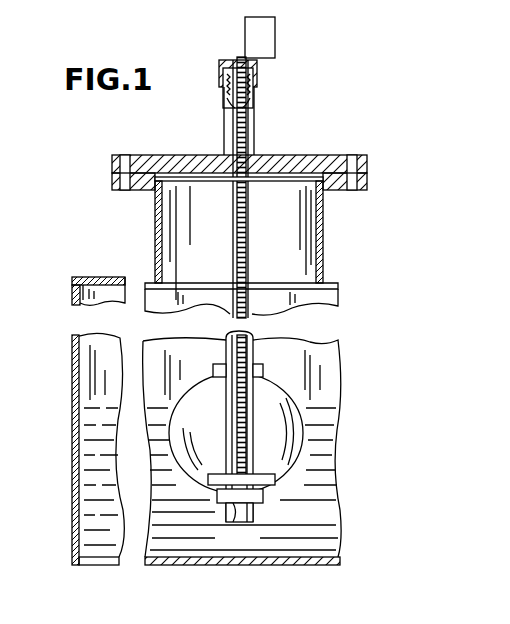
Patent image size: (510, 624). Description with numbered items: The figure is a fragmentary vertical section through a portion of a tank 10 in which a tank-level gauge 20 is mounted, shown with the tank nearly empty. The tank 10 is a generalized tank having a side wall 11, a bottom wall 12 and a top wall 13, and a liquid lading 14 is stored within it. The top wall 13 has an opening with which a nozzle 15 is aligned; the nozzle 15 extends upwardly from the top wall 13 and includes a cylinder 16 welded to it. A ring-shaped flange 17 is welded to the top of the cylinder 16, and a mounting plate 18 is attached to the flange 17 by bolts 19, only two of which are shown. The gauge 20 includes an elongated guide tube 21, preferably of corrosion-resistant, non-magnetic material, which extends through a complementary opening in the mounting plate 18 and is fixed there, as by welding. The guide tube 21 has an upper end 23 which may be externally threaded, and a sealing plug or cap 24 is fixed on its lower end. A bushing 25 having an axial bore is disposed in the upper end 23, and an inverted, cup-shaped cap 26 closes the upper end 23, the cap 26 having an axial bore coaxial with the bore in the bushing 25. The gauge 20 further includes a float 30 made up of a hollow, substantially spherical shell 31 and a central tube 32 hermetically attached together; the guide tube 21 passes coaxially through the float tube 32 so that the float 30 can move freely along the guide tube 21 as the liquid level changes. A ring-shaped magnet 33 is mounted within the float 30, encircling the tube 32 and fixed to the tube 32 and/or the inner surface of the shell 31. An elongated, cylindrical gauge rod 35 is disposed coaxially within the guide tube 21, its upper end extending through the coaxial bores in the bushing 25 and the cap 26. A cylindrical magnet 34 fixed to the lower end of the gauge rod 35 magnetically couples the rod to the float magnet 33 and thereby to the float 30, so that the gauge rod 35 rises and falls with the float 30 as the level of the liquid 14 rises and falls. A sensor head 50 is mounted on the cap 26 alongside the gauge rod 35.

The tank 10 is at (63, 222).
The side wall 11 is at (72, 534).
The bottom wall 12 is at (158, 567).
The top wall 13 is at (112, 276).
The liquid lading 14 is at (333, 453).
The nozzle 15 is at (284, 238).
The cylinder 16 is at (253, 276).
The ring-shaped flange 17 is at (279, 241).
The mounting plate 18 is at (298, 159).
The bolts 19 is at (126, 148).
The gauge 20 is at (326, 366).
The guide tube 21 is at (232, 273).
The upper end 23 is at (218, 101).
The sealing plug or cap 24 is at (371, 536).
The bushing 25 is at (251, 104).
The cup-shaped cap 26 is at (219, 77).
The float 30 is at (204, 367).
The spherical shell 31 is at (276, 480).
The central tube 32 is at (256, 410).
The ring-shaped magnet 33 is at (268, 497).
The cylindrical magnet 34 is at (236, 529).
The gauge rod 35 is at (259, 279).
The sensor head 50 is at (277, 46).